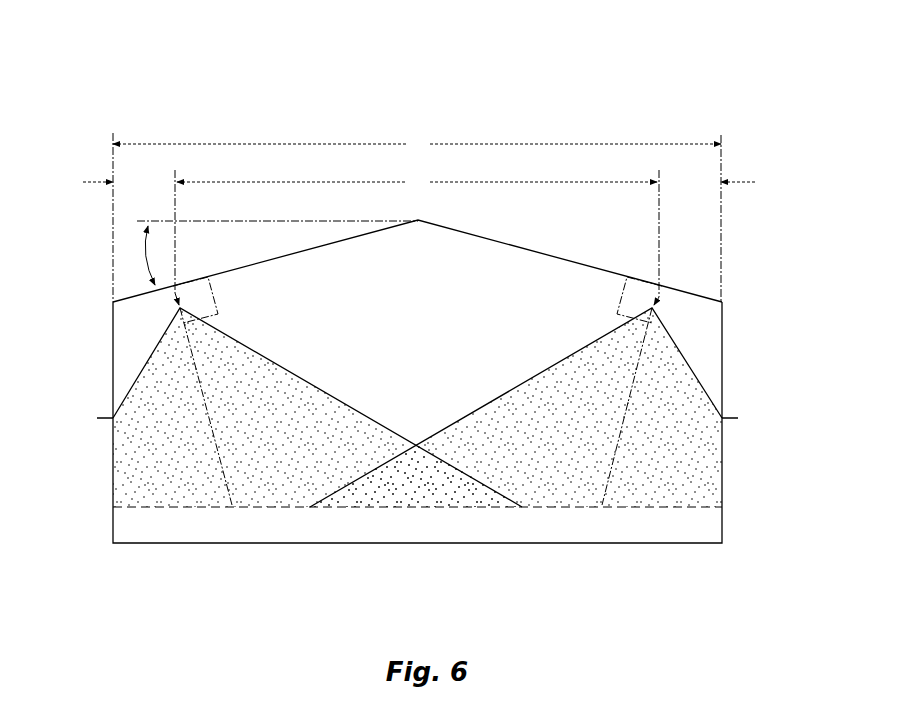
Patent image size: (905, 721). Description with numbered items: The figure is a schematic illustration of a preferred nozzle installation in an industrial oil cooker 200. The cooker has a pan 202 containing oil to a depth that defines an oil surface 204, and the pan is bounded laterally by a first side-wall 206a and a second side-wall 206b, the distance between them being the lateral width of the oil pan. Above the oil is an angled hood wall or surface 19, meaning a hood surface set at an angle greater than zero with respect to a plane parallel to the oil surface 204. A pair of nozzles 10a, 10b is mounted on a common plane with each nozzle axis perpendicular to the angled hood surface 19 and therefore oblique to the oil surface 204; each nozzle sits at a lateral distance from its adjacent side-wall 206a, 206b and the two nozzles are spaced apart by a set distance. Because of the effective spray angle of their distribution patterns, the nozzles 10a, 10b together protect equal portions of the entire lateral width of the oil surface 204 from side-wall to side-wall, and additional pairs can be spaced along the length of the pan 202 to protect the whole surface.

The industrial oil cooker 200 is at (574, 98).
The pan 202 is at (723, 531).
The angled hood wall or surface 19 is at (600, 269).
The side-wall 206a is at (153, 353).
The side-wall 206b is at (723, 371).
The nozzle 10a is at (170, 288).
The nozzle 10b is at (665, 288).
The oil surface 204 is at (655, 506).